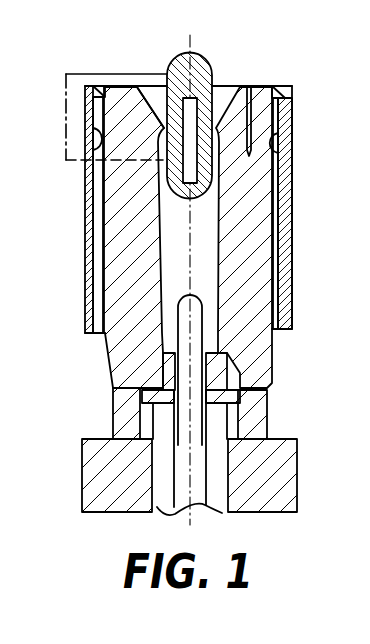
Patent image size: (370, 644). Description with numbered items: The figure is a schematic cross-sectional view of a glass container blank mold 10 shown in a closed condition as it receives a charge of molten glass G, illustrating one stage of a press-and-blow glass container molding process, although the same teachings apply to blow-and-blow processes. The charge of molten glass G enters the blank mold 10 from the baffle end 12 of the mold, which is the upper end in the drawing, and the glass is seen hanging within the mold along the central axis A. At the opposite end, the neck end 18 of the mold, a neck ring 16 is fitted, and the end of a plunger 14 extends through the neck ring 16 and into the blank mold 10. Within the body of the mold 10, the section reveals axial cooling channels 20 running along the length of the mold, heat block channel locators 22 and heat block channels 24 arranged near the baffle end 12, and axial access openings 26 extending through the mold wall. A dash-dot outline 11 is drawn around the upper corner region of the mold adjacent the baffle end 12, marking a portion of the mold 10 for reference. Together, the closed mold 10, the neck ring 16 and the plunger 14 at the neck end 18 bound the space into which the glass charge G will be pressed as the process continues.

The glass container blank mold 10 is at (269, 69).
The housing section 11 is at (93, 72).
The baffle end 12 is at (117, 98).
The plunger 14 is at (183, 339).
The neck ring 16 is at (128, 425).
The neck end 18 is at (265, 362).
The axial cooling channels 20 is at (276, 233).
The heat block channel locators 22 is at (128, 92).
The heat block channels 24 is at (249, 98).
The axial access openings 26 is at (283, 115).
The charge of molten glass G is at (182, 65).
The central axis A is at (190, 257).